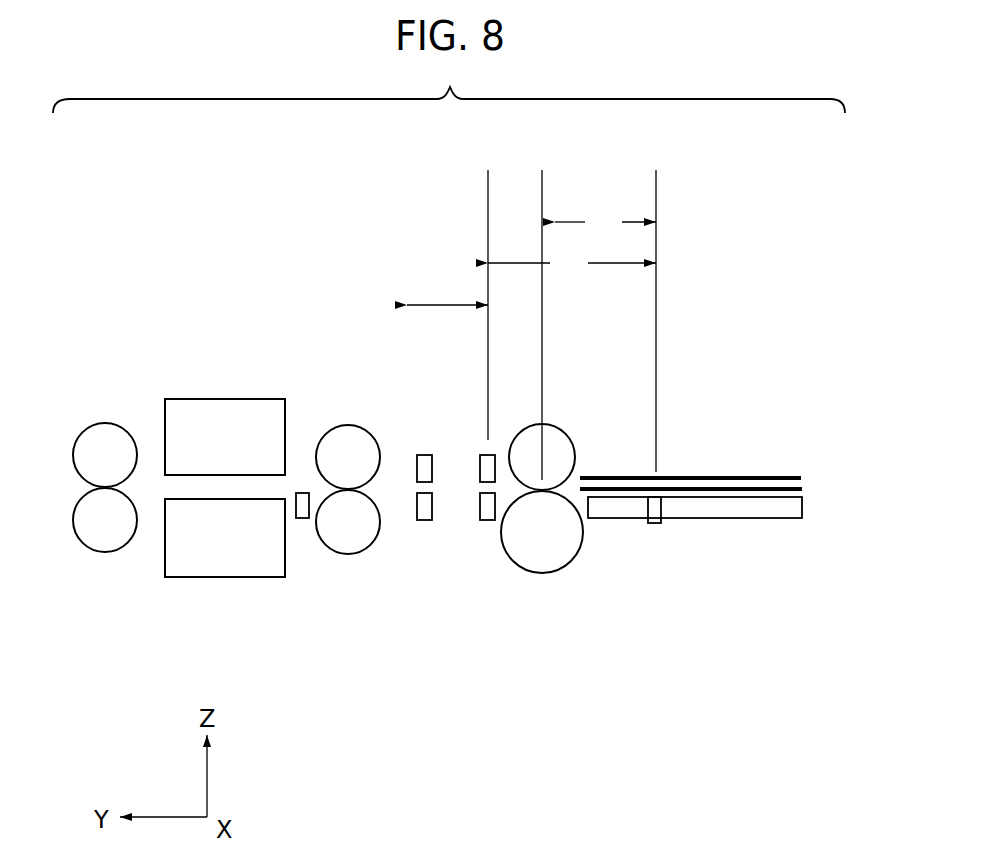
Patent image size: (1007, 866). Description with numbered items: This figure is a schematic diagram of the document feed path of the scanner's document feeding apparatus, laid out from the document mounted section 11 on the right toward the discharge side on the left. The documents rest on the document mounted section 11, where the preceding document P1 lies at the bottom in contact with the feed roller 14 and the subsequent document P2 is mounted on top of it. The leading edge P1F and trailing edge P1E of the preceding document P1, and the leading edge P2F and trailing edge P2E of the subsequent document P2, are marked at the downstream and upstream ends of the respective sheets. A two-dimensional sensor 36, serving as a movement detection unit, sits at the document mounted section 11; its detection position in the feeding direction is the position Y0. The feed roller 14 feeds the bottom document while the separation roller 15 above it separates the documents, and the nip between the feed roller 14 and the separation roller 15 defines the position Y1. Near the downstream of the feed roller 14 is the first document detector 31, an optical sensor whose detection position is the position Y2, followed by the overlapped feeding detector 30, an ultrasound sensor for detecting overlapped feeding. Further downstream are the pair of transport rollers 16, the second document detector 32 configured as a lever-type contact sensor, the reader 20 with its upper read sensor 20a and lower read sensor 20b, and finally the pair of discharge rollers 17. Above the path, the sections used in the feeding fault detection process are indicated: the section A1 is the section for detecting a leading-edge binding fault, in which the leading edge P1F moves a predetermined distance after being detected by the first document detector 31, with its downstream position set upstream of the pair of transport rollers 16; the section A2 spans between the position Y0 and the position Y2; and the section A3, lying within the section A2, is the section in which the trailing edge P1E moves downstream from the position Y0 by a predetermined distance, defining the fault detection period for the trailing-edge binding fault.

The pair of discharge rollers 17 is at (100, 563).
The reader 20 is at (193, 373).
The upper read sensor 20a is at (225, 398).
The lower read sensor 20b is at (225, 578).
The second document detector 32 is at (303, 520).
The pair of transport rollers 16 is at (348, 560).
The overlapped feeding detector 30 is at (424, 526).
The first document detector 31 is at (486, 526).
The separation roller 15 is at (556, 426).
The feed roller 14 is at (546, 574).
The document mounted section 11 is at (719, 519).
The two-dimensional sensor 36 is at (655, 525).
The position Y2 is at (491, 290).
The position Y1 is at (544, 310).
The position Y0 is at (659, 306).
The section A1 is at (447, 292).
The section A2 is at (572, 264).
The section A3 is at (605, 223).
The preceding document P1 is at (697, 487).
The subsequent document P2 is at (742, 476).
The leading edge of preceding document P1F is at (579, 492).
The leading edge of subsequent document P2F is at (582, 475).
The trailing edge of preceding document P1E is at (805, 492).
The trailing edge of subsequent document P2E is at (803, 477).